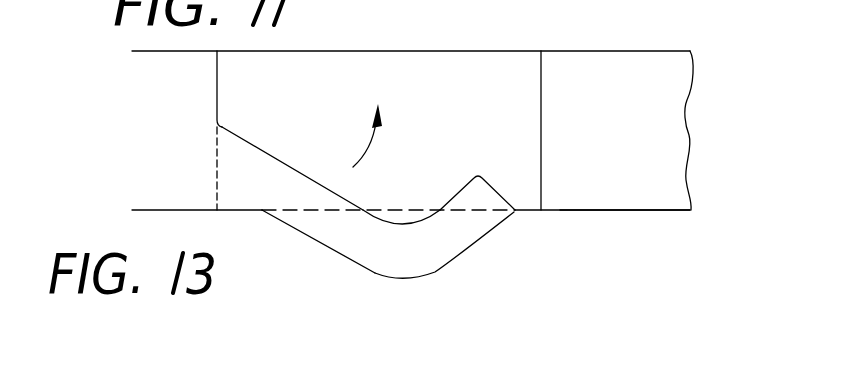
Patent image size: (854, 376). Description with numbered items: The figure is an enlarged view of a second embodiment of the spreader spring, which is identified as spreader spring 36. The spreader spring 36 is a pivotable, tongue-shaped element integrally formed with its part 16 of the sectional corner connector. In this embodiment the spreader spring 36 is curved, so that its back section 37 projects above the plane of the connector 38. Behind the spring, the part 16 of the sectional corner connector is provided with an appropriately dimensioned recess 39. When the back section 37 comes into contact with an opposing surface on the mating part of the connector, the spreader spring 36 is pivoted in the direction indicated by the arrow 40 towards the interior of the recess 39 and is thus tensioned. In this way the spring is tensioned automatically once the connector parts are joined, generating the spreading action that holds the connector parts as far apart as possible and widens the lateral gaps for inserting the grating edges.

The part of the sectional corner connector 16 is at (658, 118).
The spreader spring 36 is at (323, 230).
The back section of the spring 37 is at (428, 282).
The connector 38 is at (615, 211).
The recess 39 is at (433, 67).
The arrow 40 is at (368, 143).